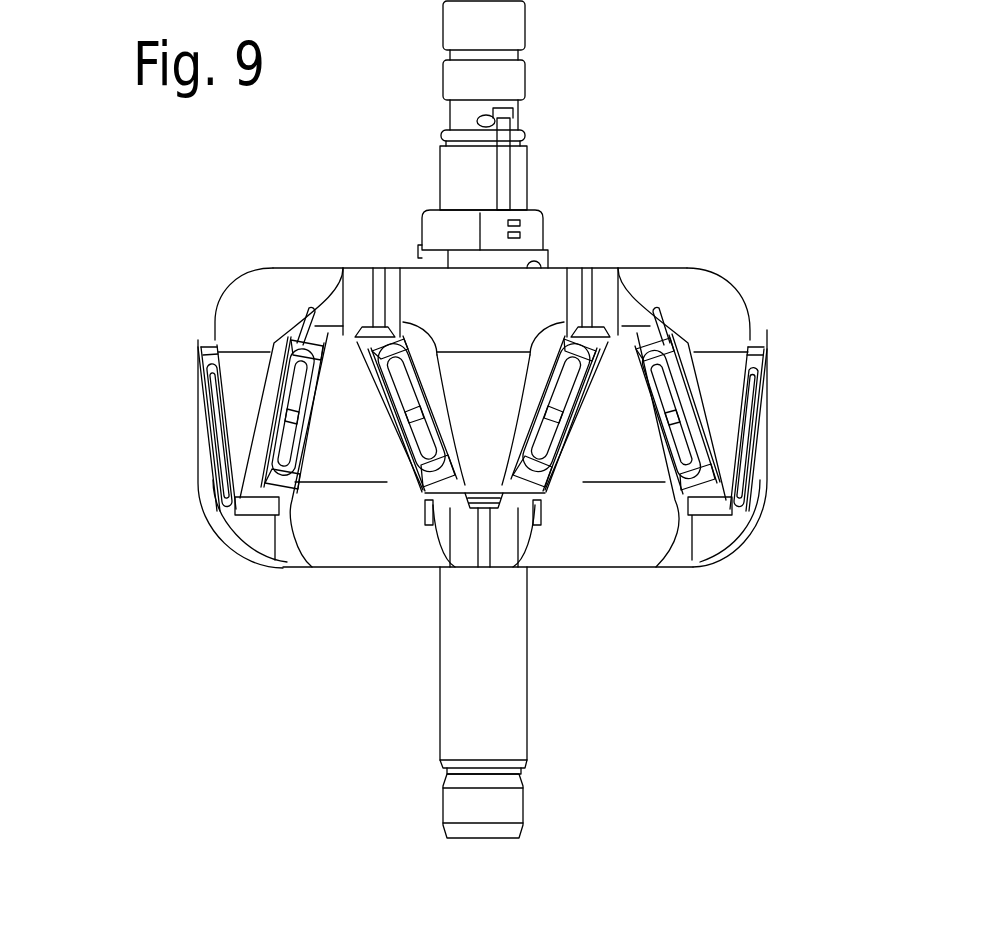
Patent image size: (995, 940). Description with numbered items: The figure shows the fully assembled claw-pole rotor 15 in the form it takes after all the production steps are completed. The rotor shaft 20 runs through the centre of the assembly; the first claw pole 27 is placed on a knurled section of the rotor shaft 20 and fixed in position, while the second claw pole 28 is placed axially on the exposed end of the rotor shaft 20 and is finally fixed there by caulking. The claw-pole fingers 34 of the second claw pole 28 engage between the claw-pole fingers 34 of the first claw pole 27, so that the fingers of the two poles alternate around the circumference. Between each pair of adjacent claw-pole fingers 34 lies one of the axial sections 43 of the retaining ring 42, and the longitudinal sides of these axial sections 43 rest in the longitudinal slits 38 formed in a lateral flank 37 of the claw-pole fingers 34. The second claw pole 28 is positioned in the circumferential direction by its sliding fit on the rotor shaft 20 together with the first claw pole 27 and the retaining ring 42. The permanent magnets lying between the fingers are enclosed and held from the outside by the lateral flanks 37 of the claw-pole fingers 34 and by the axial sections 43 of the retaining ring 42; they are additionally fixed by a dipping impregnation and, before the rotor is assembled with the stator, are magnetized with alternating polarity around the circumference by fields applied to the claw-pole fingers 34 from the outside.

The claw-pole rotor 15 is at (171, 586).
The rotor shaft 20 is at (513, 707).
The first claw pole 27 is at (712, 540).
The second claw pole 28 is at (737, 307).
The claw-pole fingers 34 is at (730, 400).
The lateral flank 37 is at (683, 340).
The longitudinal slits 38 is at (662, 325).
The retaining ring 42 is at (410, 468).
The axial sections 43 is at (566, 322).